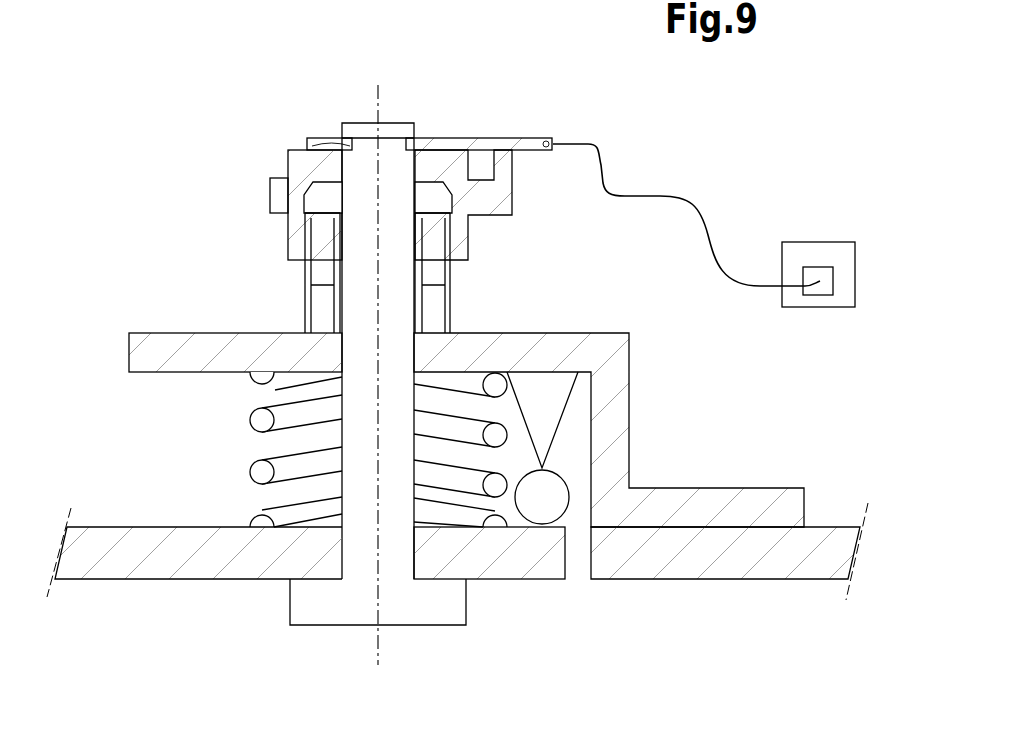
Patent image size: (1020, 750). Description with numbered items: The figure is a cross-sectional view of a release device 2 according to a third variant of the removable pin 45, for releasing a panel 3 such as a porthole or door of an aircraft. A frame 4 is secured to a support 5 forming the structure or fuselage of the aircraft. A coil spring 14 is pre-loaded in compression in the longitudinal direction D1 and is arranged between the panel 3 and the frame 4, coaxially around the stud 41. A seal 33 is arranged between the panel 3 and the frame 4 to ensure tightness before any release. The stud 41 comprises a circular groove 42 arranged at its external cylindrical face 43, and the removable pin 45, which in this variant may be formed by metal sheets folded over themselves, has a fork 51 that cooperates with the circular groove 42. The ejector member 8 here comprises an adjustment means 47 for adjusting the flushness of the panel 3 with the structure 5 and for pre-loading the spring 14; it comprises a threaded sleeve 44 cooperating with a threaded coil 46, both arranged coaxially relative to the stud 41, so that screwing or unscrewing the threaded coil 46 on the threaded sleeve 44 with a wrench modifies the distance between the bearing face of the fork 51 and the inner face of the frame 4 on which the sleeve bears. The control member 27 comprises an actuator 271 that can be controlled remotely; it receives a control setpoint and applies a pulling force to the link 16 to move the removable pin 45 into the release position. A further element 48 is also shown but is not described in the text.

The release device 2 is at (306, 653).
The panel 3 is at (172, 565).
The frame 4 is at (763, 503).
The support 5 is at (727, 580).
The ejector member 8 is at (413, 652).
The coil spring 14 is at (258, 473).
The link 16 is at (647, 193).
The control member 27 is at (835, 217).
The actuator 271 is at (820, 292).
The seal 33 is at (553, 497).
The stud 41 is at (453, 597).
The circular groove 42 is at (323, 142).
The external cylindrical face 43 is at (342, 128).
The threaded sleeve 44 is at (452, 298).
The removable pin 45 is at (504, 119).
The threaded coil 46 is at (469, 228).
The adjustment means 47 is at (258, 258).
The pin 48 is at (280, 193).
The fork 51 is at (437, 140).
The longitudinal direction D1 is at (378, 643).